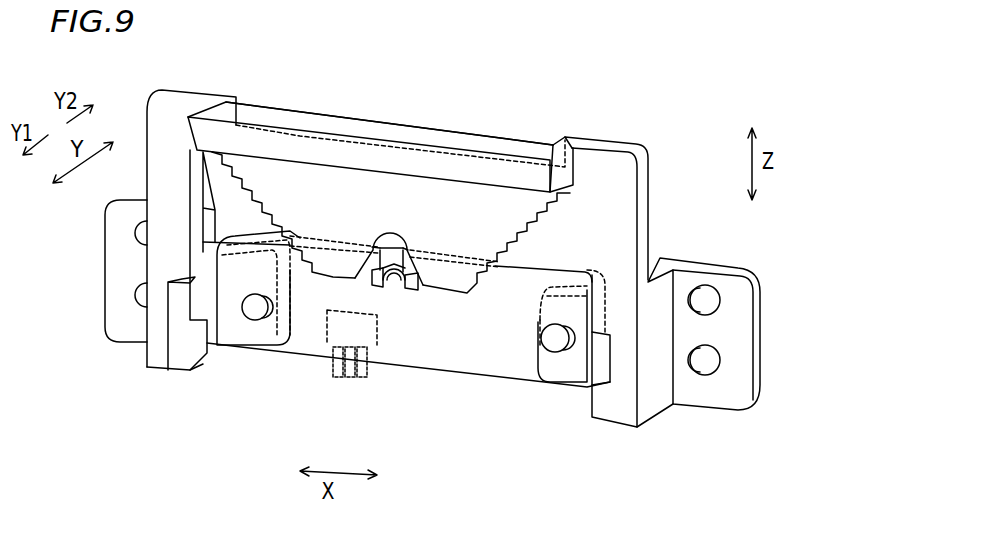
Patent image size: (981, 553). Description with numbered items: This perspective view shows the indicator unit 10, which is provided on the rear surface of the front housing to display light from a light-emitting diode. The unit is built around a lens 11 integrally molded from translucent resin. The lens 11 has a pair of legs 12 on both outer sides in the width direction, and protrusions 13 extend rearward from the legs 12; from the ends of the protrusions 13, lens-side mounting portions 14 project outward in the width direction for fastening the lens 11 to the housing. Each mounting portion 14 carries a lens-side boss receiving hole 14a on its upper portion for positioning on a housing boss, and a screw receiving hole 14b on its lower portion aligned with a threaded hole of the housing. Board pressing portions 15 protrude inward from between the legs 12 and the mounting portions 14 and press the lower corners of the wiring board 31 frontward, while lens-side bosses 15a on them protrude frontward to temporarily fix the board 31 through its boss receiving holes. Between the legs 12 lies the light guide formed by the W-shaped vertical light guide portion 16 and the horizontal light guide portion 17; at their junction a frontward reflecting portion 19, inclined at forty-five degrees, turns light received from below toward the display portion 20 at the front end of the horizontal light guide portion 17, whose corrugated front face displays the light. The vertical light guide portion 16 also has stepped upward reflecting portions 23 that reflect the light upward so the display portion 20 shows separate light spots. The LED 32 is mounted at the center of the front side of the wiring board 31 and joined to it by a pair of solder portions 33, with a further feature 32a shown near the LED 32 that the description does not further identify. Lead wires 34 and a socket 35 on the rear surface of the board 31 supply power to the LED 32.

The indicator unit 10 is at (148, 409).
The lens 11 is at (593, 113).
The legs 12 is at (173, 192).
The protrusions 13 is at (657, 393).
The lens-side mounting portions 14 is at (123, 323).
The lens-side boss receiving holes 14a is at (702, 296).
The screw receiving holes 14b is at (703, 360).
The board pressing portions 15 is at (218, 333).
The lens-side bosses 15a is at (252, 313).
The vertical light guide portion 16 is at (430, 213).
The horizontal light guide portion 17 is at (516, 147).
The frontward reflecting portion 19 is at (350, 130).
The display portion 20 is at (381, 160).
The upward reflecting portions 23 is at (253, 187).
The wiring board 31 is at (463, 350).
The LED 32 is at (397, 287).
The spring arm 32a is at (290, 300).
The solder portions 33 is at (378, 248).
The lead wires 34 is at (330, 378).
The socket 35 is at (372, 347).